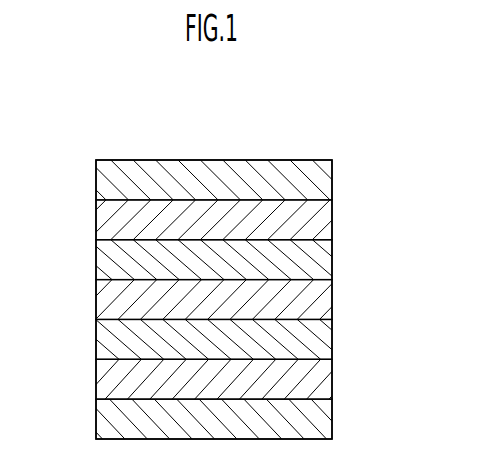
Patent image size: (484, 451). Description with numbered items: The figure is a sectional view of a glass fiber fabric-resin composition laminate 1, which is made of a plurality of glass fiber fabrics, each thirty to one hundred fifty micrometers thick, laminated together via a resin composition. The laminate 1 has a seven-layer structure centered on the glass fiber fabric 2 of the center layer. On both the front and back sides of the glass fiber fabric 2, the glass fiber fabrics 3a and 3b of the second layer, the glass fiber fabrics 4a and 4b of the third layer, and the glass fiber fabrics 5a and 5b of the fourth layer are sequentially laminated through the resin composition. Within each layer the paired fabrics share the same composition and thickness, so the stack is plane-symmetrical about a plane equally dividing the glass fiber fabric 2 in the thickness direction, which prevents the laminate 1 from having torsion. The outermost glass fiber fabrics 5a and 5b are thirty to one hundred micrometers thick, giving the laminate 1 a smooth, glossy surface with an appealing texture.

The glass fiber fabric-resin composition laminate 1 is at (339, 118).
The glass fiber fabric of the center layer 2 is at (97, 300).
The glass fiber fabric of the second layer 3a is at (97, 339).
The glass fiber fabric of the second layer 3b is at (97, 259).
The glass fiber fabric of the third layer 4a is at (97, 380).
The glass fiber fabric of the third layer 4b is at (97, 220).
The glass fiber fabric of the fourth layer 5a is at (97, 420).
The glass fiber fabric of the fourth layer 5b is at (97, 180).